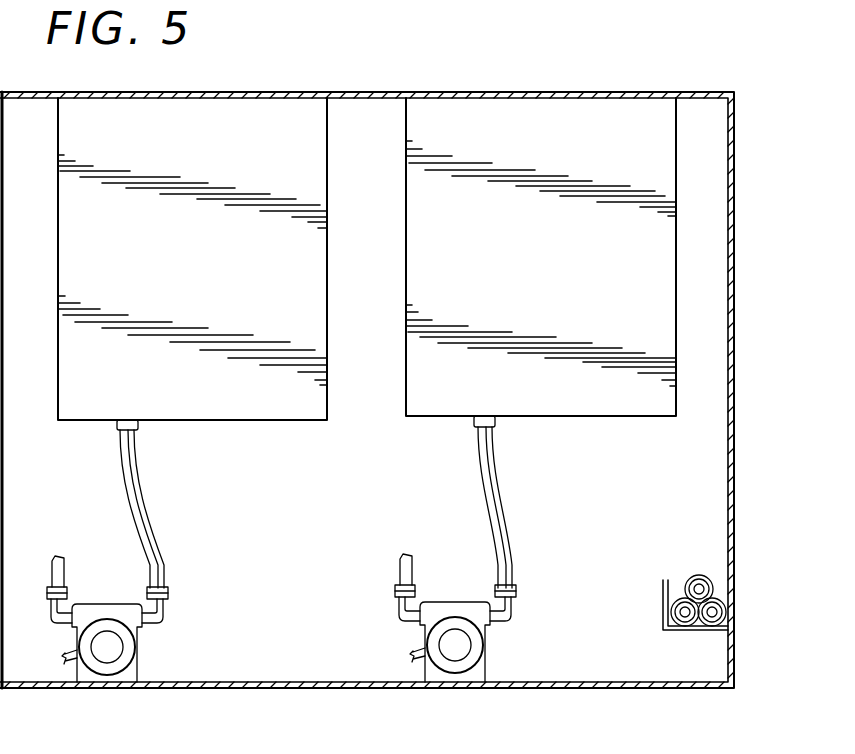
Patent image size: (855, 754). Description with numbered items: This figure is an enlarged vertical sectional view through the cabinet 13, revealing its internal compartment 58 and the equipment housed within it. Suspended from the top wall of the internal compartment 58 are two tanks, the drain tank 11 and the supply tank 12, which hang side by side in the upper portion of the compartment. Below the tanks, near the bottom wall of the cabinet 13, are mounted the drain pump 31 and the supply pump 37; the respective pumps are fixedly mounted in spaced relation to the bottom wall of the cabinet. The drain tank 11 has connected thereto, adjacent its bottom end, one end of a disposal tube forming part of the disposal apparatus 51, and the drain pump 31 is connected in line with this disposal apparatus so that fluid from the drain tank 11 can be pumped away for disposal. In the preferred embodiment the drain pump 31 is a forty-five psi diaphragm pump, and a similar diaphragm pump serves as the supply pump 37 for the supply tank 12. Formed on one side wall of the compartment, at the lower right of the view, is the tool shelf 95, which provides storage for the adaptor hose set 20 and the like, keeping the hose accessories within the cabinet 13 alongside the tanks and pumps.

The drain tank 11 is at (287, 421).
The supply tank 12 is at (573, 417).
The cabinet 13 is at (735, 302).
The adaptor hose set 20 is at (699, 574).
The drain pump 31 is at (136, 648).
The supply pump 37 is at (486, 647).
The disposal apparatus 51 is at (166, 547).
The internal compartment 58 is at (303, 617).
The tool shelf 95 is at (663, 606).